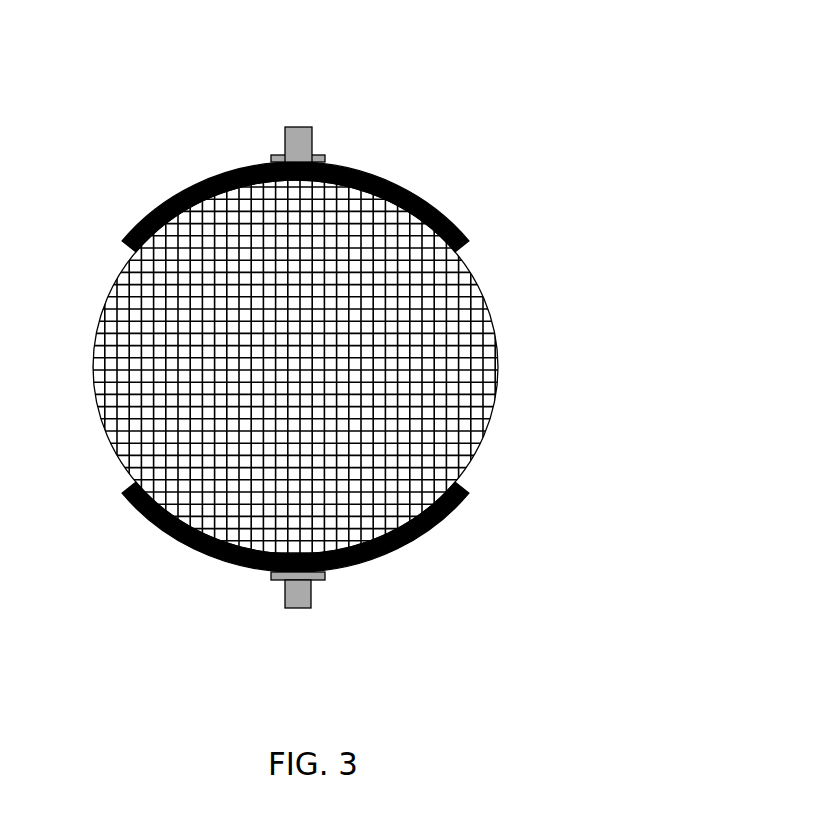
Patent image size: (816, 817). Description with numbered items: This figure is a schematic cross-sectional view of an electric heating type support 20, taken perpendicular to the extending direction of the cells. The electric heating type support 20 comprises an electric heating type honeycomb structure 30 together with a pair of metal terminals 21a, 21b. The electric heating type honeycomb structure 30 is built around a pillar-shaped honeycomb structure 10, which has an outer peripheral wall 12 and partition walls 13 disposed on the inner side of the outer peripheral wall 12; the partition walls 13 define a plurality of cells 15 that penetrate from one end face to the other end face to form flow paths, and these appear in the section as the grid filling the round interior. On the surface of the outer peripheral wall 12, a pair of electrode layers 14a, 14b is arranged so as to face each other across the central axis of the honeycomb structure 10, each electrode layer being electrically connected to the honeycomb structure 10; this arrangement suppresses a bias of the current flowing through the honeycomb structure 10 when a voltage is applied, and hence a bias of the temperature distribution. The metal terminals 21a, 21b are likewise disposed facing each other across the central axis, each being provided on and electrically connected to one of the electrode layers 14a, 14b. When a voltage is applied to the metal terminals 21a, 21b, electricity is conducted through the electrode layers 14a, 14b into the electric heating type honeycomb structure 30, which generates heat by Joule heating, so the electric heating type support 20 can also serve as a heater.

The honeycomb structure 10 is at (483, 289).
The outer peripheral wall 12 is at (483, 448).
The partition walls 13 is at (118, 360).
The electrode layer 14a is at (167, 202).
The electrode layer 14b is at (172, 537).
The cells 15 is at (137, 312).
The electric heating type support 20 is at (247, 110).
The metal terminal 21a is at (312, 140).
The metal terminal 21b is at (312, 598).
The electric heating type honeycomb structure 30 is at (416, 189).